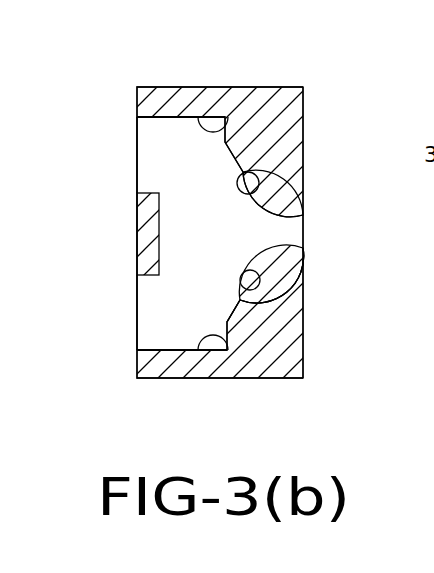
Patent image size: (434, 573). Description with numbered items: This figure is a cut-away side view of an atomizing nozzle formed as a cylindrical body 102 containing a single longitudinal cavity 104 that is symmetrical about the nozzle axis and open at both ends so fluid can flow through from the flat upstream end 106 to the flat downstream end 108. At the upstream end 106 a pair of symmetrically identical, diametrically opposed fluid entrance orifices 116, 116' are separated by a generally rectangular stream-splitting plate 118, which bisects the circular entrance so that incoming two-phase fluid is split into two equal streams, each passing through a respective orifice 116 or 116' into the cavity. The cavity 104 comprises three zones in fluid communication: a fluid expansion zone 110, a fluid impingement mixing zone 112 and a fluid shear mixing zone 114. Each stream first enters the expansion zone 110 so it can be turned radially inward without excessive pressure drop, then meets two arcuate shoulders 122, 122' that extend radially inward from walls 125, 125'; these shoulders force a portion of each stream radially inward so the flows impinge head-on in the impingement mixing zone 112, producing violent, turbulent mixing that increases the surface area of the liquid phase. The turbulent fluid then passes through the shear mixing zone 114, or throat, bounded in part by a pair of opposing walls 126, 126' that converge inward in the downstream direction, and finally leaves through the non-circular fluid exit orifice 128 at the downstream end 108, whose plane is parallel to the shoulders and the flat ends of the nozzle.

The cylindrical body 102 is at (243, 87).
The longitudinal cavity 104 is at (235, 250).
The upstream end 106 is at (136, 102).
The downstream end 108 is at (305, 357).
The fluid expansion zone 110 is at (173, 223).
The fluid impingement mixing zone 112 is at (208, 277).
The fluid shear mixing zone 114 is at (303, 247).
The fluid entrance orifice 116 is at (95, 155).
The fluid entrance orifice 116' is at (81, 312).
The stream-splitting plate 118 is at (140, 248).
The arcuate shoulder 122 is at (197, 85).
The arcuate shoulder 122' is at (202, 384).
The wall 125 is at (105, 132).
The wall 125' is at (120, 339).
The converging wall 126 is at (305, 170).
The converging wall 126' is at (314, 293).
The fluid exit orifice 128 is at (297, 230).